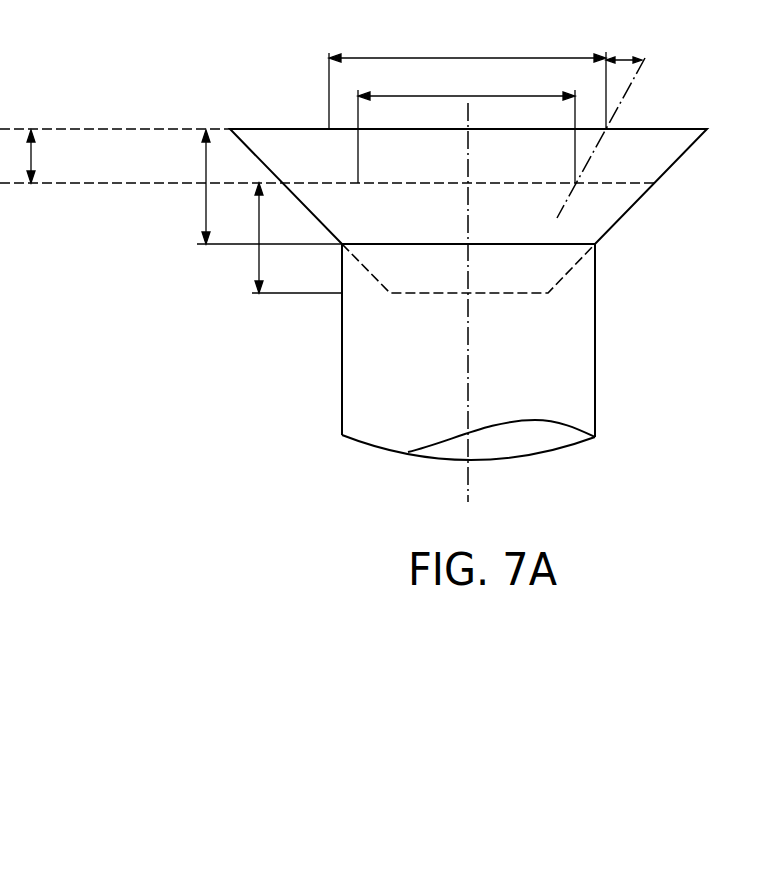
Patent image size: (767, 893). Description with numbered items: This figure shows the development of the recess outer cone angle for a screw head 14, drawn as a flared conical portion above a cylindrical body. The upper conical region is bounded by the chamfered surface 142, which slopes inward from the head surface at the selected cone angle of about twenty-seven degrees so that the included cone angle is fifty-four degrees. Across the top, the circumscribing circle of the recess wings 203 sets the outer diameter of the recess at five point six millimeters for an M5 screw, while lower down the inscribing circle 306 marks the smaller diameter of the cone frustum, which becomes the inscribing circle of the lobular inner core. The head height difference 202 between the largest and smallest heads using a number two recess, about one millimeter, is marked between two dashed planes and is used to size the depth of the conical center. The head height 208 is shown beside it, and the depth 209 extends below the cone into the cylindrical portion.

The screw head 14 is at (492, 280).
The chamfered surface 142 is at (630, 179).
The head height difference 202 is at (33, 160).
The circumscribing circle of the recess wings 203 is at (456, 57).
The head height 208 is at (204, 211).
The inner cone depth dimension 209 is at (257, 261).
The inscribing circle of the lobular inner core 306 is at (431, 95).